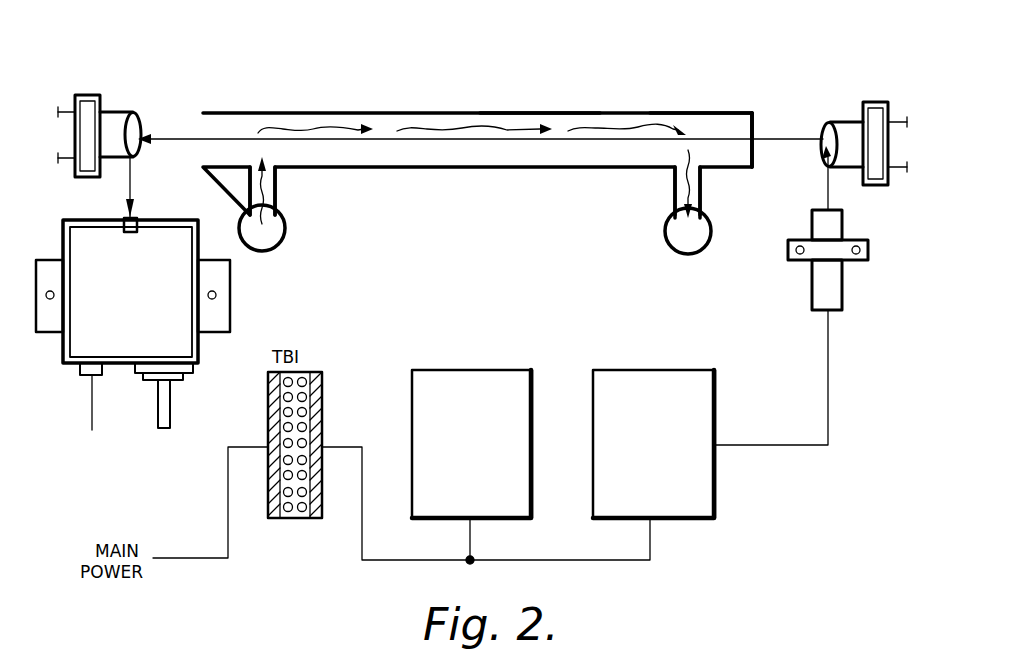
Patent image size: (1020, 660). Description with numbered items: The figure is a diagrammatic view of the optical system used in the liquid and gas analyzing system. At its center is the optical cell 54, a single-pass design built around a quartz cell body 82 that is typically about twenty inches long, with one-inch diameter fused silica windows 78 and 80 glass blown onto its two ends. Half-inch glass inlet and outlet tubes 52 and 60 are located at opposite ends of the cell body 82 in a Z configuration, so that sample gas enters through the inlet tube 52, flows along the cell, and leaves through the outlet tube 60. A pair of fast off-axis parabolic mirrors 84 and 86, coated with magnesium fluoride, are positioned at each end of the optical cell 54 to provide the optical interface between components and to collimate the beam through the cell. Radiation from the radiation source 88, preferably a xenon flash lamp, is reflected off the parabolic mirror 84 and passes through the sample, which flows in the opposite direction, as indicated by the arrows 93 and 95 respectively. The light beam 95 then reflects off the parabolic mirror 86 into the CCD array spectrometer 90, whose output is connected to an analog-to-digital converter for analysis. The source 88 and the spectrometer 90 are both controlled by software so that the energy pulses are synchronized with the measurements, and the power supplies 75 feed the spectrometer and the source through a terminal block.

The inlet tube 52 is at (277, 188).
The optical cell 54 is at (531, 100).
The outlet tube 60 is at (703, 192).
The power supply 75 is at (472, 370).
The fused silica window 78 is at (203, 122).
The fused silica window 80 is at (753, 116).
The cell body 82 is at (707, 122).
The parabolic mirror 84 is at (880, 185).
The parabolic mirror 86 is at (120, 112).
The radiation source 88 is at (845, 285).
The CCD array spectrometer 90 is at (198, 242).
The sample flow arrow 93 is at (322, 120).
The light beam 95 is at (517, 142).